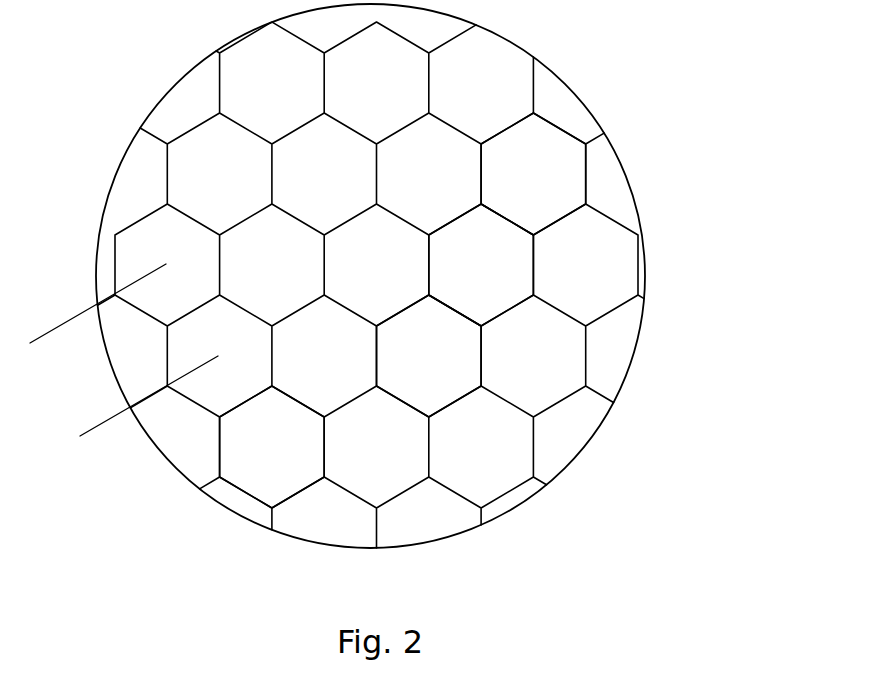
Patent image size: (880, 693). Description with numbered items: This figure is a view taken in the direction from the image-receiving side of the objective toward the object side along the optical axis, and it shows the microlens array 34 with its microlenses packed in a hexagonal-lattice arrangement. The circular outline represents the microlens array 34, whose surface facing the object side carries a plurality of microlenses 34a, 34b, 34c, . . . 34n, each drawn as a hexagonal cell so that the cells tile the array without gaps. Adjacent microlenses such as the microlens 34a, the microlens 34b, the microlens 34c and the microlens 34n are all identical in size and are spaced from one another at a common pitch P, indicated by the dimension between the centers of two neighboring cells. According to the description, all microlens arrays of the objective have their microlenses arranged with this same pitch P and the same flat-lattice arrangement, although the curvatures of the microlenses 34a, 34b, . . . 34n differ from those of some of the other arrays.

The microlens array 34 is at (160, 81).
The microlens 34a is at (540, 167).
The microlens 34b is at (485, 264).
The microlens 34c is at (430, 355).
The microlens 34n is at (273, 445).
The pitch P is at (42, 354).